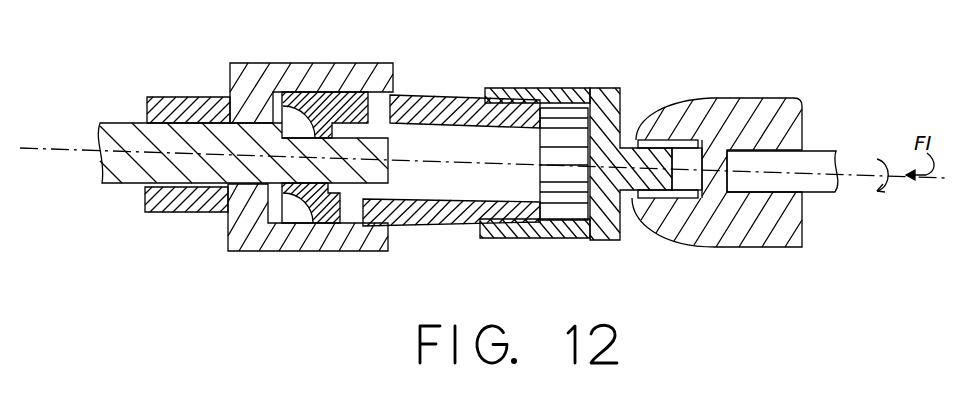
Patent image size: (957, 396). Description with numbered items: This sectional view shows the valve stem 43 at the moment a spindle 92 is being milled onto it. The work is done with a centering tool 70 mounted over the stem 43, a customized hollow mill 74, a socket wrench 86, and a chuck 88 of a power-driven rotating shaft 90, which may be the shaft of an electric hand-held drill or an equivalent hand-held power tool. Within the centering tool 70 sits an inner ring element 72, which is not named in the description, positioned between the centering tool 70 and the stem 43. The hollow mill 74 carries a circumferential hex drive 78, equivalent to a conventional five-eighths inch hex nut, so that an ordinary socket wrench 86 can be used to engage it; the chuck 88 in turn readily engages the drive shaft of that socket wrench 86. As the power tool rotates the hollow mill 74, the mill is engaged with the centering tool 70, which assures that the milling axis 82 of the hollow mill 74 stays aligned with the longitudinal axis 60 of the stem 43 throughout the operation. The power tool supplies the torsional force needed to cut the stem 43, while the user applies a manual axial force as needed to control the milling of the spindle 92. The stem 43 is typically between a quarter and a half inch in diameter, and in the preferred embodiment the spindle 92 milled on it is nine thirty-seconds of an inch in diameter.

The stem 43 is at (128, 192).
The longitudinal axis 60 is at (37, 151).
The centering tool 70 is at (265, 63).
The bearing ring 72 is at (333, 90).
The hollow mill 74 is at (418, 93).
The hex drive 78 is at (513, 103).
The milling axis 82 is at (455, 163).
The socket wrench 86 is at (583, 88).
The chuck 88 is at (733, 248).
The power-driven rotating shaft 90 is at (820, 194).
The spindle 92 is at (392, 166).